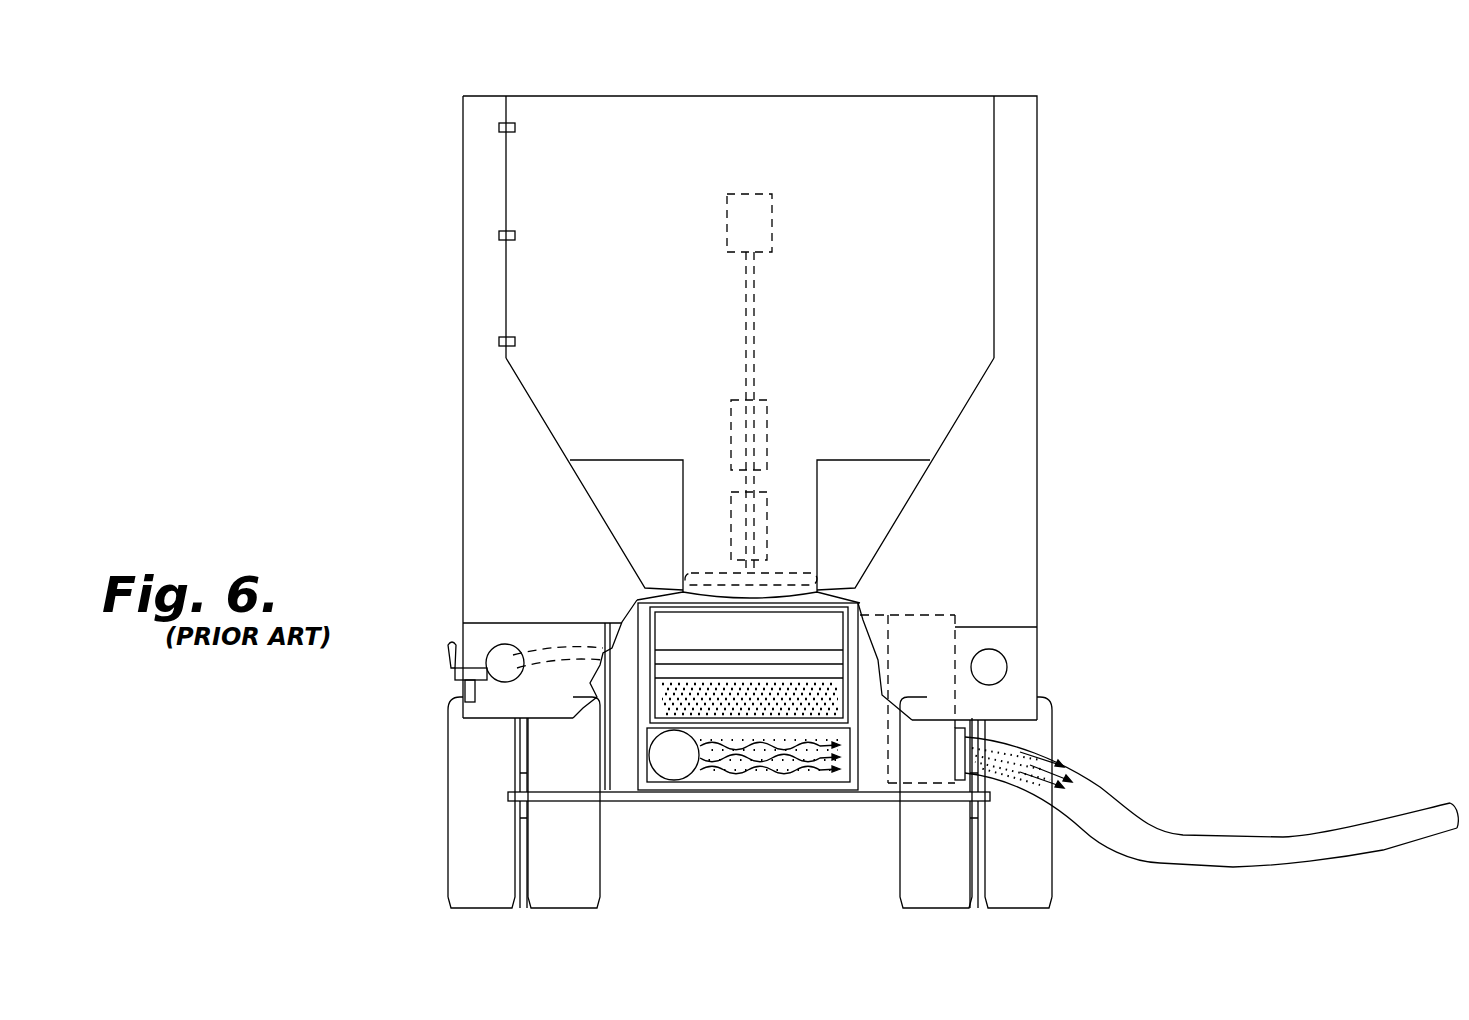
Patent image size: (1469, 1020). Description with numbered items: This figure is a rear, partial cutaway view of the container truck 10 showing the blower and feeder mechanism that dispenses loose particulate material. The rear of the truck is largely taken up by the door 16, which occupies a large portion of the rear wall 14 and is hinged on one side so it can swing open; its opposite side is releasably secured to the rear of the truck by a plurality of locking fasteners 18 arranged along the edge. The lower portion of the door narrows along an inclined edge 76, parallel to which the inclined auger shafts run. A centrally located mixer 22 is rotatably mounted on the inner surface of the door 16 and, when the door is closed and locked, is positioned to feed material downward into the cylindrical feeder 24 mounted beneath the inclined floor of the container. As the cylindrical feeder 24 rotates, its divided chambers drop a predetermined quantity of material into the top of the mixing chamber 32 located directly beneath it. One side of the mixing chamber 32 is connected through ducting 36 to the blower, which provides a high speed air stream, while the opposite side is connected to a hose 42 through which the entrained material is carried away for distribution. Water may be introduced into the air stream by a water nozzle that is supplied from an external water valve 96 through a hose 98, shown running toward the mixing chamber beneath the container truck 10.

The container truck 10 is at (1110, 157).
The rear wall 14 is at (952, 558).
The door 16 is at (852, 318).
The locking fasteners 18 is at (499, 341).
The mixer 22 is at (738, 320).
The cylindrical feeder 24 is at (847, 650).
The mixing chamber 32 is at (783, 775).
The ducting 36 is at (678, 775).
The hose 42 is at (1180, 837).
The inclined edge 76 is at (543, 425).
The external water valve 96 is at (448, 662).
The hose 98 is at (563, 660).